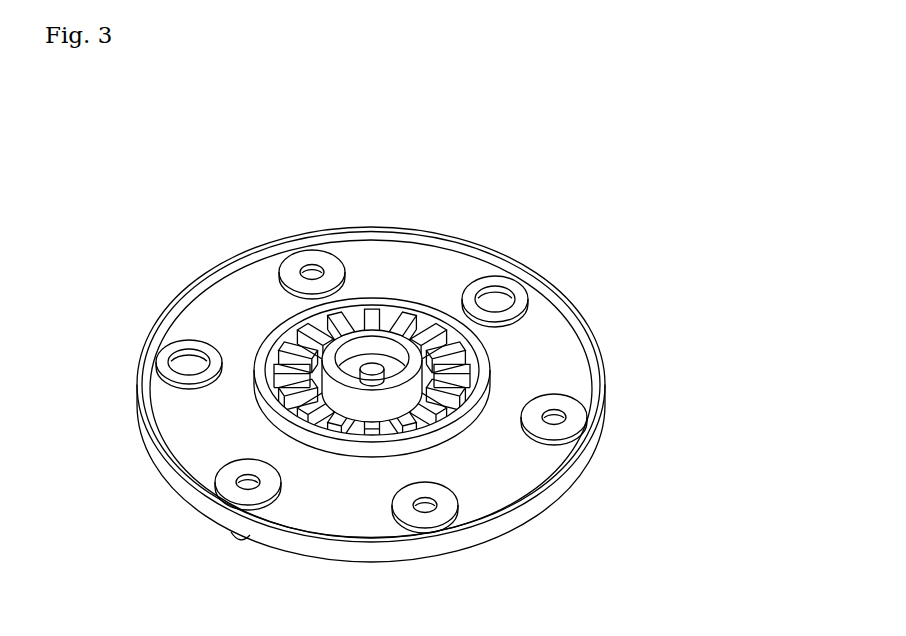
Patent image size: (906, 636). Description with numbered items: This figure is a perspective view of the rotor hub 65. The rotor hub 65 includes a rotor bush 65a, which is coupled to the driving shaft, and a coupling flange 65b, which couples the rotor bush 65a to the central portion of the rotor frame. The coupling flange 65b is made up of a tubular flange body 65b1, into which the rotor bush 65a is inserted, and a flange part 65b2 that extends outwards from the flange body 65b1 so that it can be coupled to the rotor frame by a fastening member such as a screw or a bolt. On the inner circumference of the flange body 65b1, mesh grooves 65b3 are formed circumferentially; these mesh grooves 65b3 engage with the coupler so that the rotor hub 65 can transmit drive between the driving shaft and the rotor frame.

The rotor hub 65 is at (127, 190).
The rotor bush 65a is at (395, 337).
The coupling flange 65b is at (541, 383).
The flange body 65b1 is at (485, 368).
The flange part 65b2 is at (540, 468).
The mesh grooves 65b3 is at (437, 417).